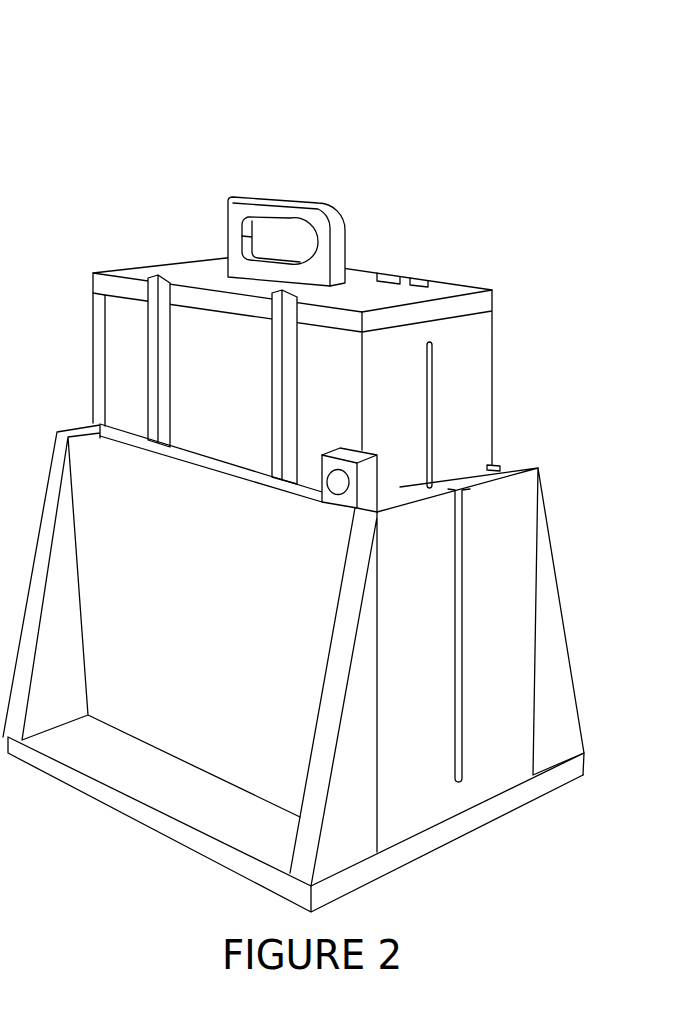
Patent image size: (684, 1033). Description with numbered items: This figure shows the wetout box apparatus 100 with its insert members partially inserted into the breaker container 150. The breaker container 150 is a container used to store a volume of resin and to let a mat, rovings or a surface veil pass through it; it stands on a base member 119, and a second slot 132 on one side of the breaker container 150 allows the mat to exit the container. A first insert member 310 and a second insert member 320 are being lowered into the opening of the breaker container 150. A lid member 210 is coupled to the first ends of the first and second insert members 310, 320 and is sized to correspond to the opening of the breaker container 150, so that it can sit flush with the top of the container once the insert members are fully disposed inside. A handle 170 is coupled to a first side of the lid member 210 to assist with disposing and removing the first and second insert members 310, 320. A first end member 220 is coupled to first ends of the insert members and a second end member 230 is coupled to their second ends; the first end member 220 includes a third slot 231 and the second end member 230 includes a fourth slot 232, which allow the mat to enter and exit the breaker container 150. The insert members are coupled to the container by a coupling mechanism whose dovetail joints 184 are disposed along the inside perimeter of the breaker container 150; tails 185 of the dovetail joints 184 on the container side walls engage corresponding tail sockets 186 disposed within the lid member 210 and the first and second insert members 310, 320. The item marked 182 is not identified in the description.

The wetout box apparatus 100 is at (332, 531).
The base member 119 is at (143, 829).
The second slot 132 is at (460, 637).
The breaker container 150 is at (332, 668).
The handle 170 is at (298, 196).
The rail / notch 182 is at (416, 278).
The dovetail joints 184 is at (500, 466).
The tails 185 is at (287, 497).
The tail sockets 186 is at (157, 288).
The lid member 210 is at (298, 363).
The first end member 220 is at (90, 308).
The second end member 230 is at (503, 362).
The third slot 231 is at (175, 264).
The fourth slot 232 is at (433, 372).
The first insert member 310 is at (366, 280).
The second insert member 320 is at (200, 444).